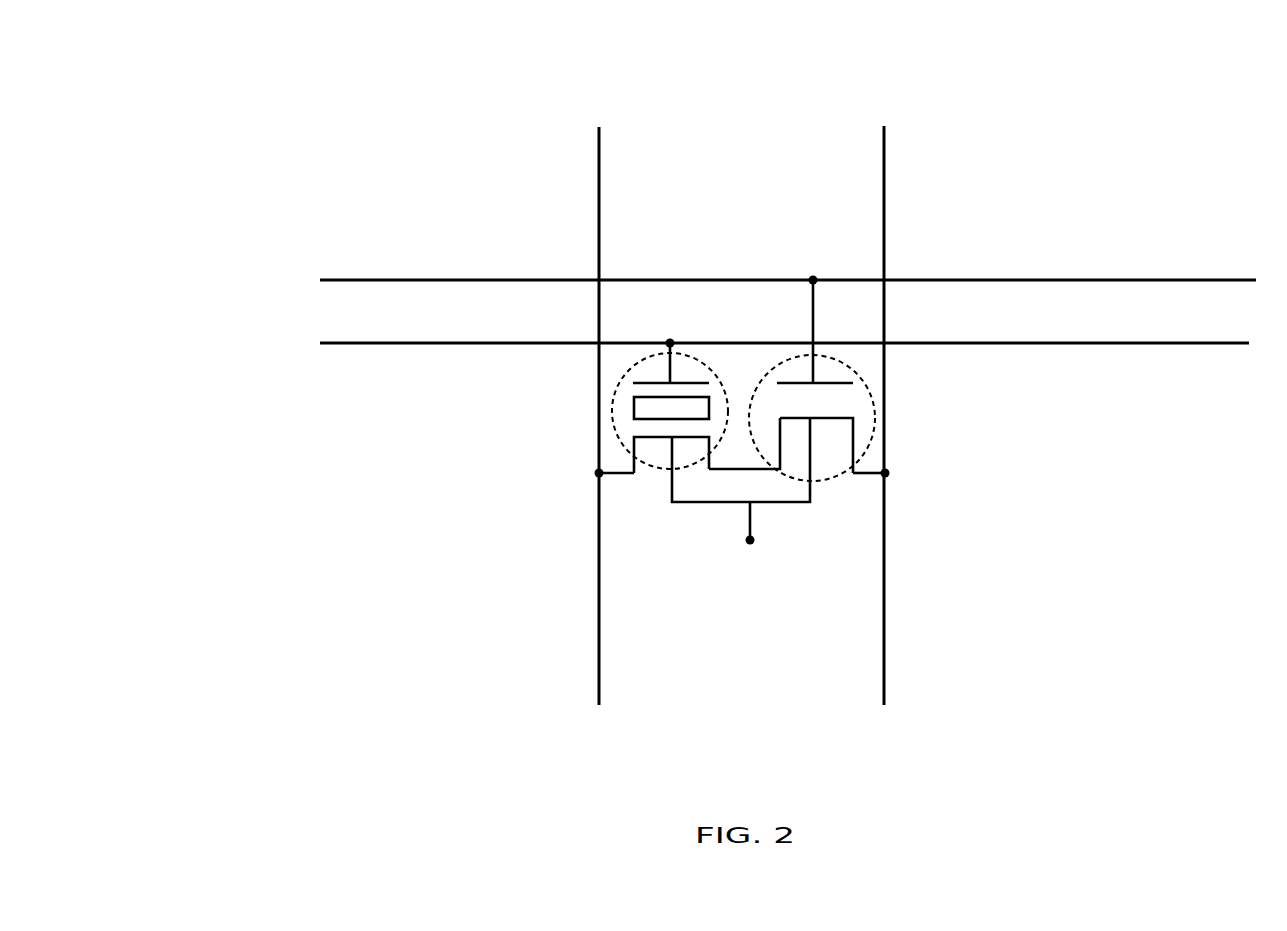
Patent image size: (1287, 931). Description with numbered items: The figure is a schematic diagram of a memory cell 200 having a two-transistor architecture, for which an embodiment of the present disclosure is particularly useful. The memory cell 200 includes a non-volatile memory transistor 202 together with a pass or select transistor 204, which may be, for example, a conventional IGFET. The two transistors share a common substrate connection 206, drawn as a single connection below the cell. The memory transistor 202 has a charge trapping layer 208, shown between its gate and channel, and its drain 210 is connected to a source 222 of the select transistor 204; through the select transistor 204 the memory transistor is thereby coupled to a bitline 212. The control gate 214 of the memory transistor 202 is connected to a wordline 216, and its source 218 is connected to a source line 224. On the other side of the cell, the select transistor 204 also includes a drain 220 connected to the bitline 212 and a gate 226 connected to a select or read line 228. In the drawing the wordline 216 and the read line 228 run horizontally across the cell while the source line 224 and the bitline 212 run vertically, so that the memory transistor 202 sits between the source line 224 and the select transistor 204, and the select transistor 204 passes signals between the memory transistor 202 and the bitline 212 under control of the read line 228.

The memory cell 200 is at (256, 72).
The memory transistor 202 is at (600, 419).
The select transistor 204 is at (893, 421).
The substrate connection 206 is at (748, 543).
The charge trapping layer 208 is at (634, 408).
The drain 210 is at (708, 470).
The bitline 212 is at (884, 158).
The control gate 214 is at (661, 343).
The wordline 216 is at (360, 343).
The source 218 is at (630, 475).
The drain 220 is at (862, 474).
The source 222 is at (773, 472).
The source line 224 is at (600, 160).
The gate 226 is at (817, 331).
The read line 228 is at (358, 278).